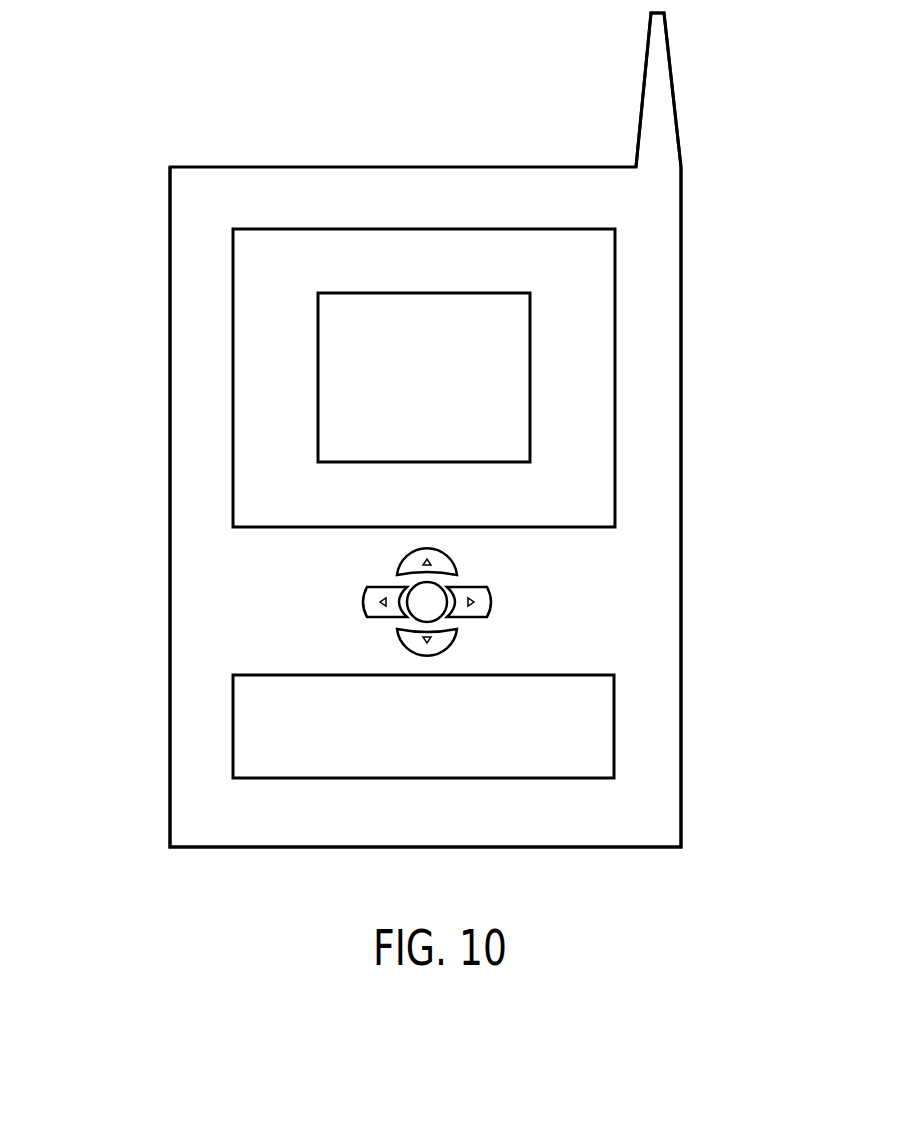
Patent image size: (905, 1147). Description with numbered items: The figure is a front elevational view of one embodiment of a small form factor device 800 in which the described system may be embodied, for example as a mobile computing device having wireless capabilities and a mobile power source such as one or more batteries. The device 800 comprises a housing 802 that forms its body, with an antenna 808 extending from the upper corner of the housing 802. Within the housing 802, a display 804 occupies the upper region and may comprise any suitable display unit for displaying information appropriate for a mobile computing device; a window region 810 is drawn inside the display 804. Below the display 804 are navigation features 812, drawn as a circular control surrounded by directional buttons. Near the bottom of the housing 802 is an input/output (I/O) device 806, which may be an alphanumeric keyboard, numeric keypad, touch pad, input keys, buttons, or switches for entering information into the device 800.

The small form factor device 800 is at (172, 112).
The housing 802 is at (170, 594).
The display 804 is at (615, 283).
The input/output (I/O) device 806 is at (616, 727).
The antenna 808 is at (644, 90).
The display window 810 is at (425, 293).
The navigation features 812 is at (519, 602).